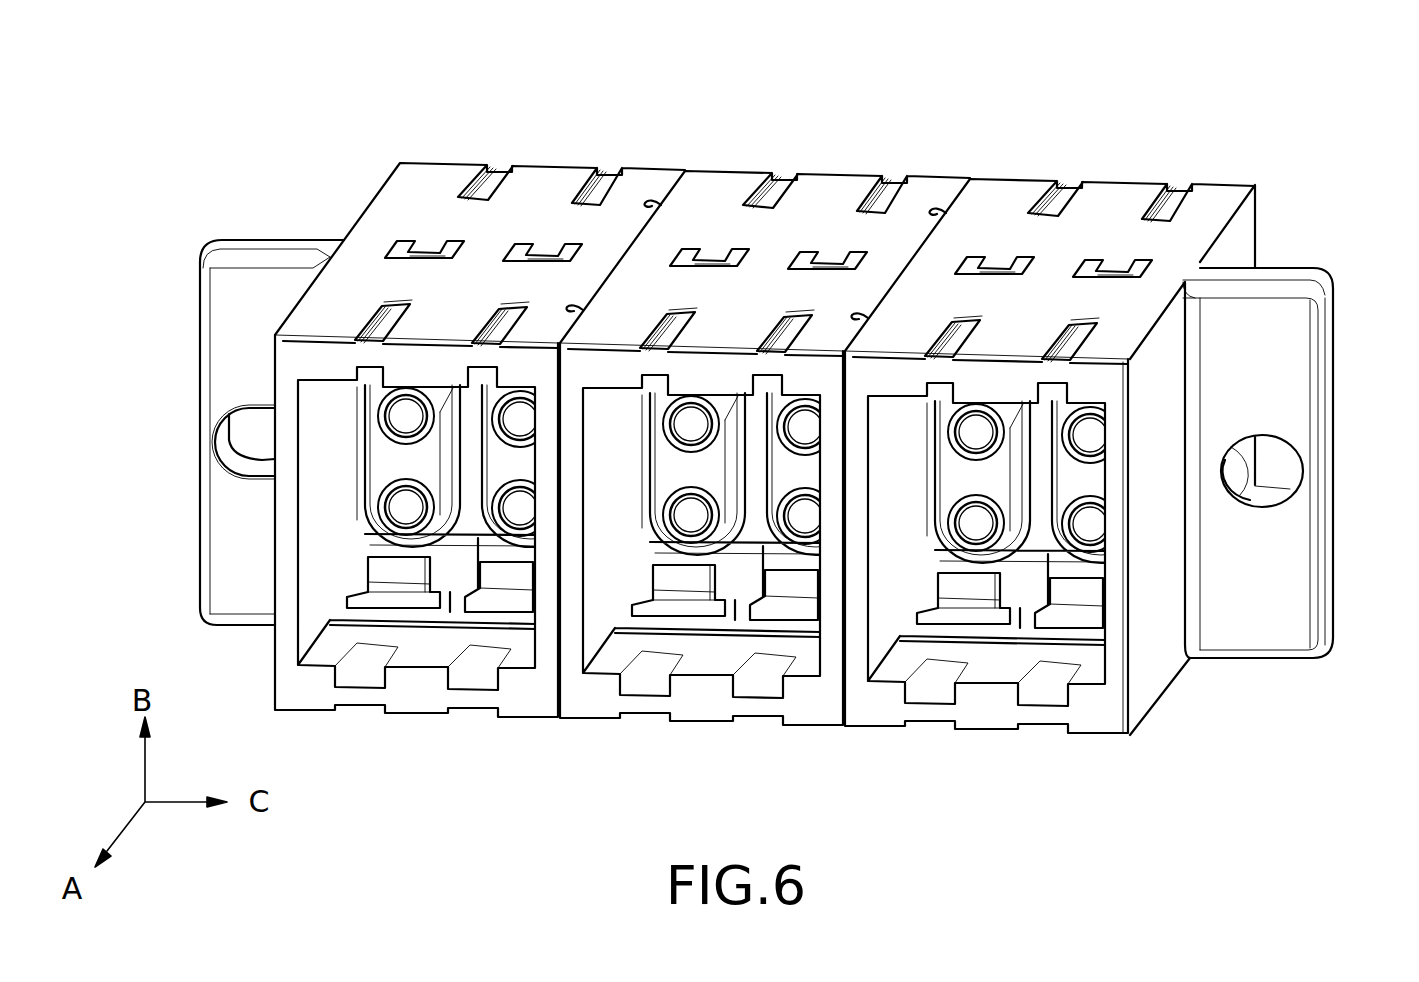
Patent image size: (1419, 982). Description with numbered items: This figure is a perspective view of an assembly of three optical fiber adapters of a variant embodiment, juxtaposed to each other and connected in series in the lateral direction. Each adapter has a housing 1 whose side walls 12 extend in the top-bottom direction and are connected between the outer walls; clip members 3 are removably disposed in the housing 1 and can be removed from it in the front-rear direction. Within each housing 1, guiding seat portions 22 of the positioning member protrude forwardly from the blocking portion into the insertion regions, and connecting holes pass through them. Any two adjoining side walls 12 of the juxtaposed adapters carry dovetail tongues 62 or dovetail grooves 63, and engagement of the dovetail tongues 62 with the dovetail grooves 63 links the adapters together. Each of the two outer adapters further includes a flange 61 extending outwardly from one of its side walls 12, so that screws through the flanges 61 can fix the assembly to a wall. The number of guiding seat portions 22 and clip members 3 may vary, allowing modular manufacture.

The housing 1 is at (548, 138).
The clip member 3 is at (693, 655).
The side wall 12 is at (285, 583).
The guiding seat portion 22 is at (826, 476).
The flange 61 is at (218, 331).
The dovetail tongue 62 is at (944, 212).
The dovetail groove 63 is at (652, 204).